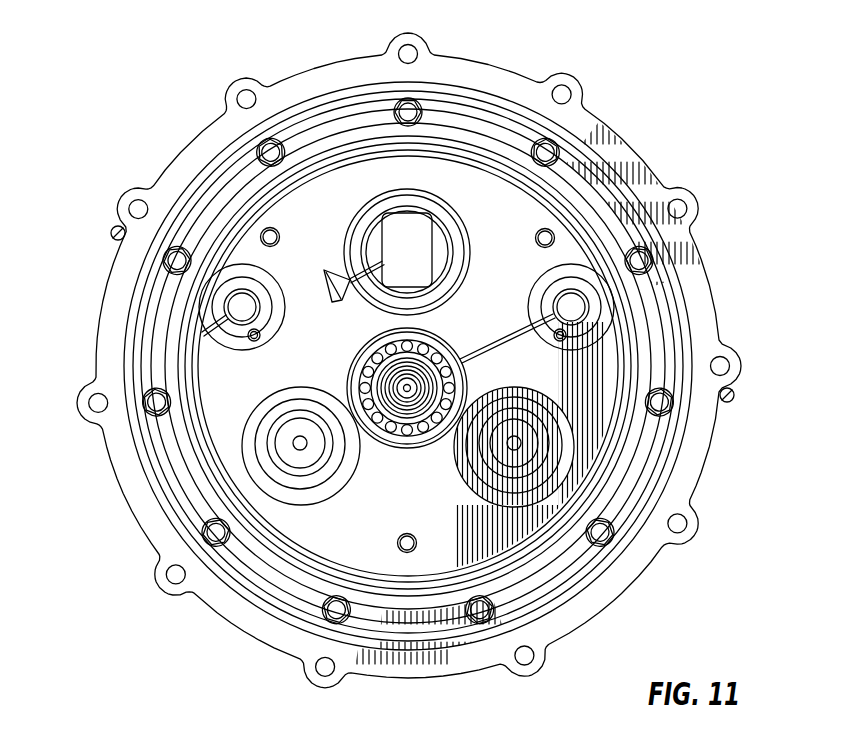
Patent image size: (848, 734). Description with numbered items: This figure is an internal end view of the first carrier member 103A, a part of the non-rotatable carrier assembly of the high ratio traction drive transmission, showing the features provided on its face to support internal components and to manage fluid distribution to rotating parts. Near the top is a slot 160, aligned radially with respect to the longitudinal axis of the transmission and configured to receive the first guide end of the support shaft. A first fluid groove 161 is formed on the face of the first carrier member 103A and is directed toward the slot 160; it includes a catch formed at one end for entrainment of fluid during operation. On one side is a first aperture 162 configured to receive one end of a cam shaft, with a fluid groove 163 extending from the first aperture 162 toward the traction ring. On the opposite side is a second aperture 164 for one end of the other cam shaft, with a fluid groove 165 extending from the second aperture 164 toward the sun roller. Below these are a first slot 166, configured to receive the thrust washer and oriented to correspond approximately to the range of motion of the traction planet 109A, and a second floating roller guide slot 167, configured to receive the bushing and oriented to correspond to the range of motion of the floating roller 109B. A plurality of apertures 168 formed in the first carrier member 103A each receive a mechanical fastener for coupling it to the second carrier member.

The first carrier member 103A is at (498, 63).
The slot 160 is at (437, 247).
The first fluid groove 161 is at (337, 270).
The first aperture 162 is at (237, 287).
The fluid groove 163 is at (223, 310).
The second aperture 164 is at (588, 310).
The fluid groove 165 is at (527, 342).
The first slot 166 is at (277, 480).
The second floating roller guide slot 167 is at (522, 488).
The apertures 168 is at (262, 230).
The traction planet 109A is at (318, 468).
The floating roller 109B is at (505, 475).